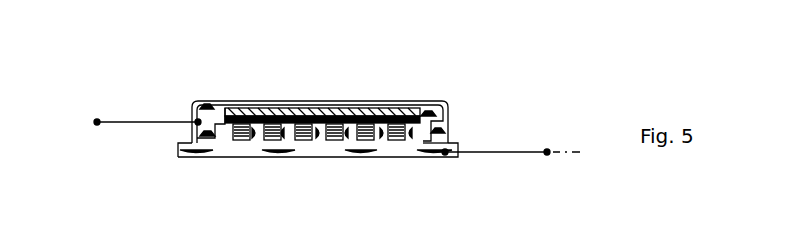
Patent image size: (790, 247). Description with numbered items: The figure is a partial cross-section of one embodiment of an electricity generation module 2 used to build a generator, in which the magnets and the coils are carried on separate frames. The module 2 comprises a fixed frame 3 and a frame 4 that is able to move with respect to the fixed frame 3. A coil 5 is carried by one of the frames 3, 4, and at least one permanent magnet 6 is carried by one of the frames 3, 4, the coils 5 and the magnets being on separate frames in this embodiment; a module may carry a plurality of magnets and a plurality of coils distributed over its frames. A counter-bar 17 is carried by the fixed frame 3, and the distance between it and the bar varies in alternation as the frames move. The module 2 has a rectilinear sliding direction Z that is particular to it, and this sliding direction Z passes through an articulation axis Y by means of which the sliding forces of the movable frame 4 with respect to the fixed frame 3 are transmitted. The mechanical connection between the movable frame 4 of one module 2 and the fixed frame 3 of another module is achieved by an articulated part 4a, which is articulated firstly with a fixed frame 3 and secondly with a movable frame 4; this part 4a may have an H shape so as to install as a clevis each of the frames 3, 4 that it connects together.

The electricity generation module 2 is at (201, 71).
The fixed frame 3 is at (441, 102).
The movable frame 4 is at (408, 155).
The articulated part 4a is at (495, 149).
The coil 5 is at (243, 141).
The permanent magnet 6 is at (245, 110).
The counter-bar 17 is at (459, 113).
The articulation axis Y is at (458, 156).
The sliding direction Z is at (577, 152).